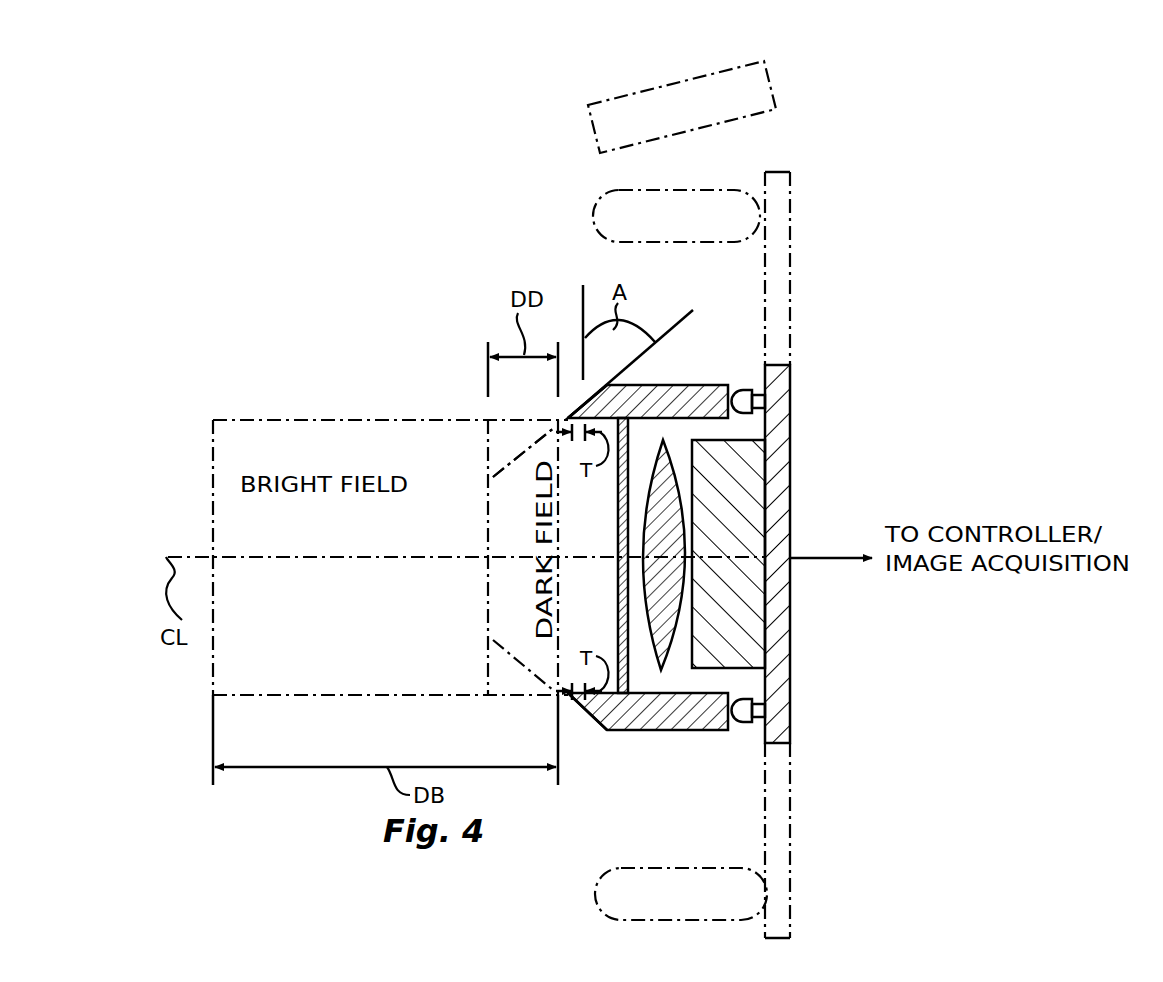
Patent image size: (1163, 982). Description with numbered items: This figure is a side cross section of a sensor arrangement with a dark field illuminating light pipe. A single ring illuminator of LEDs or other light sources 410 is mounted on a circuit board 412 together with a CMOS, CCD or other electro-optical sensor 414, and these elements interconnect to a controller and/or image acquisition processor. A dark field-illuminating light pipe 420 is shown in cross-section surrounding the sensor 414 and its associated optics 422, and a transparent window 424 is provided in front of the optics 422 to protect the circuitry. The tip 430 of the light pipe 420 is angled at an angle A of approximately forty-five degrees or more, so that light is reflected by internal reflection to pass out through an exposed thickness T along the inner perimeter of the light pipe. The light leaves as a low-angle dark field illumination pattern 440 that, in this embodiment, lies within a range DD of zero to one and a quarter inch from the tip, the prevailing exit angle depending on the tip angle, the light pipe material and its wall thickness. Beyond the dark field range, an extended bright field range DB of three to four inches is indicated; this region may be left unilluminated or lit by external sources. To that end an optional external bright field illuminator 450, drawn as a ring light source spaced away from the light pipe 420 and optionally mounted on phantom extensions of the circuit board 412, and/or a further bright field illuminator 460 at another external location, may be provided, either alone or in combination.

The light sources 410 is at (748, 390).
The circuit board 412 is at (790, 420).
The electro-optical sensor 414 is at (762, 526).
The dark field-illuminating light pipe 420 is at (712, 385).
The optics 422 is at (651, 697).
The transparent window 424 is at (613, 732).
The tip of the light pipe 430 is at (571, 388).
The dark field illumination pattern 440 is at (513, 458).
The bright field illuminator 450 is at (747, 190).
The bright field illuminator 460 is at (773, 88).